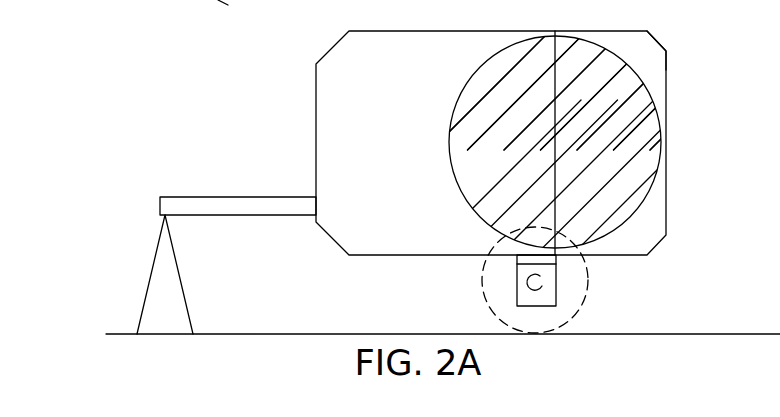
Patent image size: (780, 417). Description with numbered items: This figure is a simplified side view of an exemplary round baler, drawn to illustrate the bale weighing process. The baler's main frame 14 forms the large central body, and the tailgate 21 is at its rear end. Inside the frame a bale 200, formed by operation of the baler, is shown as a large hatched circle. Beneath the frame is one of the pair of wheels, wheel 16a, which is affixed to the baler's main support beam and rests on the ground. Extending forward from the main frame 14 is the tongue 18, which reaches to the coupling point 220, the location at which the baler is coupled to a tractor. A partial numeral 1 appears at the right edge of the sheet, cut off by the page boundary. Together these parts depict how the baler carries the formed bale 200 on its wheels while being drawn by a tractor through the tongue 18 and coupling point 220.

The main frame 14 is at (332, 47).
The tailgate 21 is at (657, 40).
The bale 200 is at (652, 140).
The wheel 16a is at (587, 298).
The tongue 18 is at (195, 197).
The coupling point 220 is at (165, 275).
The partial numeral 1 is at (774, 262).